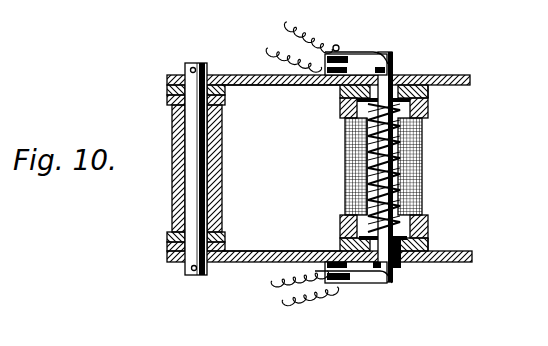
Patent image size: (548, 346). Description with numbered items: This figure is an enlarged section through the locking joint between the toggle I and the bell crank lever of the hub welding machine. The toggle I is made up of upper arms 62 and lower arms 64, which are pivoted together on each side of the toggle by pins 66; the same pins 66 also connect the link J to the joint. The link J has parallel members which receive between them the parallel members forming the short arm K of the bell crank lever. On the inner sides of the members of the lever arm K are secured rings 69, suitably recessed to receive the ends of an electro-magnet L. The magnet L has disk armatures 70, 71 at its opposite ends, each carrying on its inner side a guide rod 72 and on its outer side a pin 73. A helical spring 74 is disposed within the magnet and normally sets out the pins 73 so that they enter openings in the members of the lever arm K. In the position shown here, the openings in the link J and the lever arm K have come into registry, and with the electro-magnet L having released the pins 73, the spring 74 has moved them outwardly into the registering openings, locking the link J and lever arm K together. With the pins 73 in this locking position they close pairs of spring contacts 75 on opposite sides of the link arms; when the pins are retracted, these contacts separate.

The upper arms 62 is at (166, 89).
The lower arms 64 is at (160, 104).
The pins 66 is at (204, 57).
The rings 69 is at (342, 110).
The disk armature 70 is at (405, 88).
The disk armature 71 is at (399, 264).
The guide rods 72 is at (424, 131).
The pins 73 is at (391, 73).
The helical spring 74 is at (385, 158).
The spring contacts 75 is at (348, 52).
The toggle I is at (319, 168).
The link J is at (281, 168).
The short arm K is at (428, 247).
The electro-magnet L is at (424, 160).